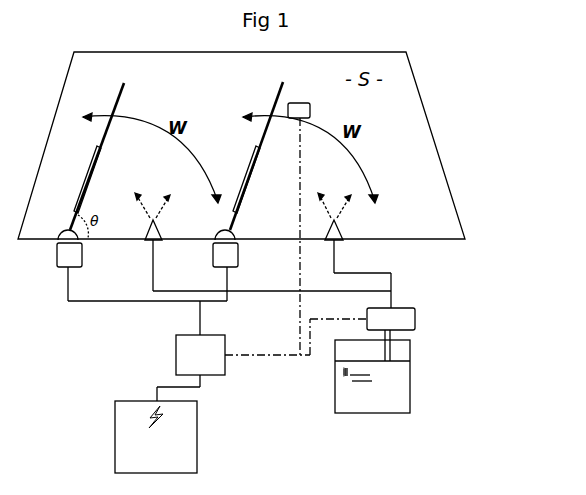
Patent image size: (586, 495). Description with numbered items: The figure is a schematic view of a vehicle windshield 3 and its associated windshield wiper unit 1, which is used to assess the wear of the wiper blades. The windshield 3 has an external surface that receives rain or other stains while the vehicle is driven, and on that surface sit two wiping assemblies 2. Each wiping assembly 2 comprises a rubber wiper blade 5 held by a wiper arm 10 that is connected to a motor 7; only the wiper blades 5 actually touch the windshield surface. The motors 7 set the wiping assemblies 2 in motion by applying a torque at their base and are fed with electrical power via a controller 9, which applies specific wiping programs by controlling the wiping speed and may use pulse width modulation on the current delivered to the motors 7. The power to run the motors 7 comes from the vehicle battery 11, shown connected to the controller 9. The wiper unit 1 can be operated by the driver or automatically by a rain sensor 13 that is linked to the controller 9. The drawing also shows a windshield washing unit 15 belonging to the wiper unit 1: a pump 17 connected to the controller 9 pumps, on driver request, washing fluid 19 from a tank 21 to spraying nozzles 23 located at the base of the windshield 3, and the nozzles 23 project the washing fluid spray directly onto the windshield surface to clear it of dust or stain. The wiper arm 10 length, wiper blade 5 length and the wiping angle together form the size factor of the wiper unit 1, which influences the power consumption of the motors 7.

The windshield wiper unit 1 is at (272, 380).
The wiping assembly 2 is at (112, 143).
The windshield 3 is at (468, 258).
The wiper blade 5 is at (116, 85).
The motor 7 is at (54, 256).
The controller 9 is at (200, 355).
The wiper arm 10 is at (86, 163).
The vehicle battery 11 is at (156, 437).
The rain sensor 13 is at (301, 100).
The windshield washing unit 15 is at (406, 382).
The pump 17 is at (391, 334).
The washing fluid 19 is at (372, 376).
The tank 21 is at (371, 418).
The spraying nozzles 23 is at (161, 229).